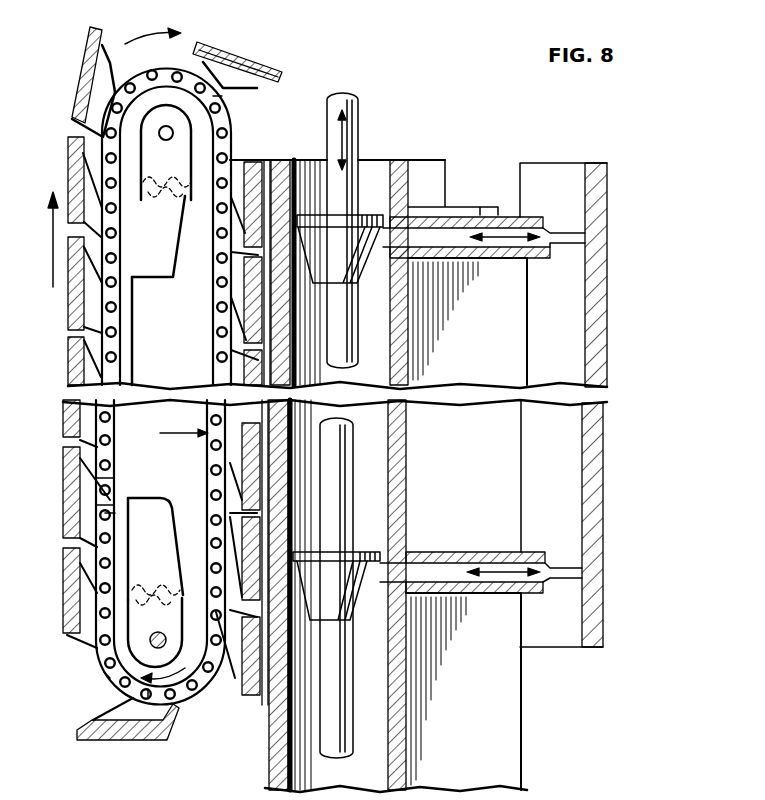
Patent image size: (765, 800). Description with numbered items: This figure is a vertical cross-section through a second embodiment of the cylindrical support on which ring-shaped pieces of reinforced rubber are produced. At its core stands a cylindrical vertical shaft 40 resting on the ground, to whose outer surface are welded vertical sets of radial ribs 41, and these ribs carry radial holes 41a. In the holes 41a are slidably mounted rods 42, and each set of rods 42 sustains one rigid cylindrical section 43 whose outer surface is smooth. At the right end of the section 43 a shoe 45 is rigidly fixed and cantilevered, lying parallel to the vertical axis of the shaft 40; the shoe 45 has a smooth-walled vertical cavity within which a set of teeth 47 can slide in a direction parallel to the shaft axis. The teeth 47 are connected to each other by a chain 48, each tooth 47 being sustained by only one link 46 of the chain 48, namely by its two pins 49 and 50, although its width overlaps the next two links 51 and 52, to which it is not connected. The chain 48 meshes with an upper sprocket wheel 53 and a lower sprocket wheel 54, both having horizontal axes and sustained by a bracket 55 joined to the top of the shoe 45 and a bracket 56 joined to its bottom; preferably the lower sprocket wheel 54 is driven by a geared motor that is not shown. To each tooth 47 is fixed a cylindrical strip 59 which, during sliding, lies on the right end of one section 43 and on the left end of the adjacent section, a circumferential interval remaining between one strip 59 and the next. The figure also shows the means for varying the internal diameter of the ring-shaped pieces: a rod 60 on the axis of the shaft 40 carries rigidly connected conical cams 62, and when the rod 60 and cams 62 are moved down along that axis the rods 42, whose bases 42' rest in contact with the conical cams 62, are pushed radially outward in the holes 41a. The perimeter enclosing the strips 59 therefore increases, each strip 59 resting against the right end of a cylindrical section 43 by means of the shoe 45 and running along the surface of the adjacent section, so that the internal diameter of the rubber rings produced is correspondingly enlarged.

The cylindrical vertical shaft 40 is at (403, 445).
The radial ribs 41 is at (513, 217).
The holes 41a is at (443, 250).
The rods 42 is at (590, 380).
The bases of the rods 42' is at (338, 423).
The cylindrical section 43 is at (427, 170).
The shoe 45 is at (132, 366).
The link 46 is at (193, 78).
The teeth 47 is at (210, 56).
The chain 48 is at (171, 435).
The pin 49 is at (173, 69).
The pin 50 is at (223, 99).
The link 51 is at (115, 505).
The link 52 is at (100, 478).
The sprocket wheel 53 is at (197, 118).
The sprocket wheel 54 is at (122, 650).
The bracket 55 is at (147, 268).
The bracket 56 is at (175, 520).
The cylindrical strip 59 is at (252, 60).
The rod 60 is at (358, 125).
The conical cams 62 is at (370, 213).